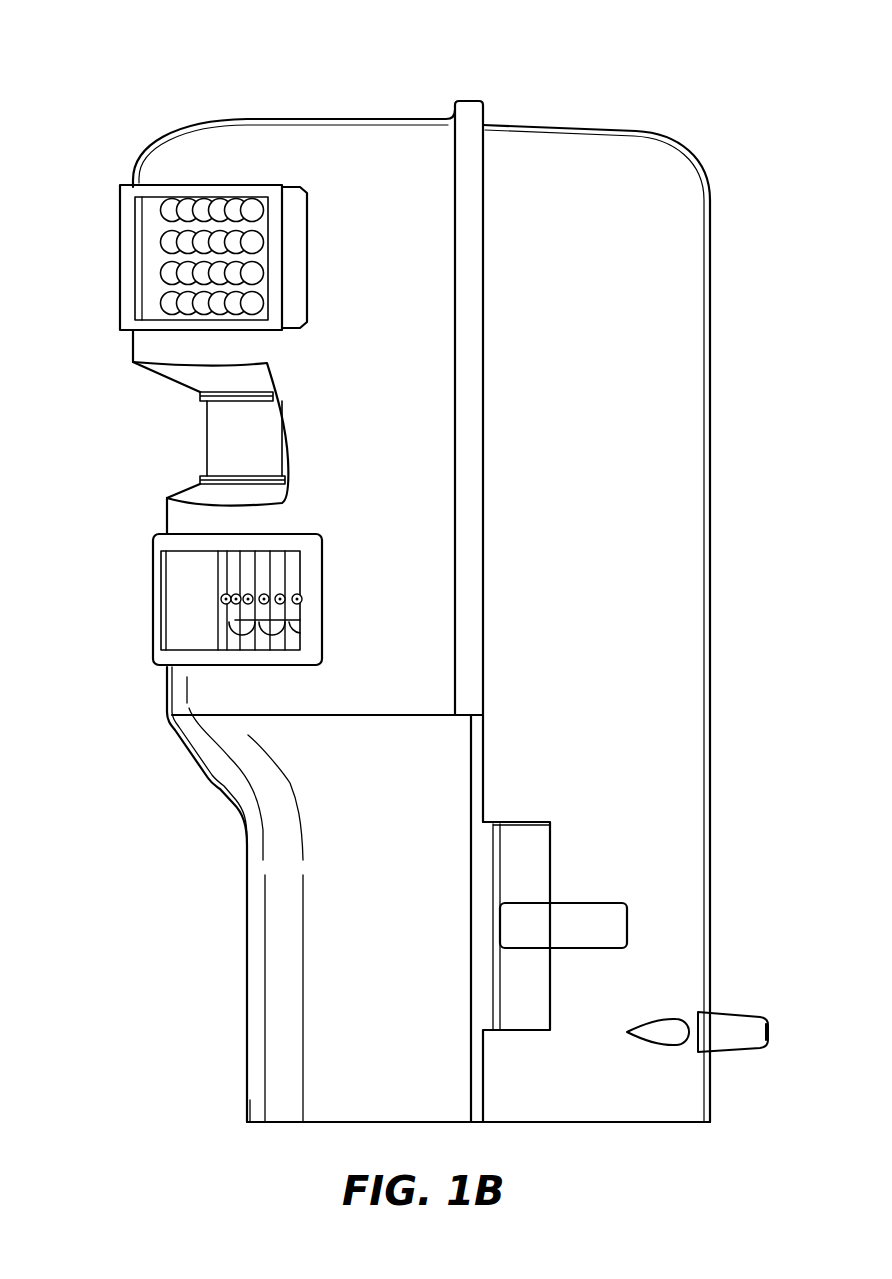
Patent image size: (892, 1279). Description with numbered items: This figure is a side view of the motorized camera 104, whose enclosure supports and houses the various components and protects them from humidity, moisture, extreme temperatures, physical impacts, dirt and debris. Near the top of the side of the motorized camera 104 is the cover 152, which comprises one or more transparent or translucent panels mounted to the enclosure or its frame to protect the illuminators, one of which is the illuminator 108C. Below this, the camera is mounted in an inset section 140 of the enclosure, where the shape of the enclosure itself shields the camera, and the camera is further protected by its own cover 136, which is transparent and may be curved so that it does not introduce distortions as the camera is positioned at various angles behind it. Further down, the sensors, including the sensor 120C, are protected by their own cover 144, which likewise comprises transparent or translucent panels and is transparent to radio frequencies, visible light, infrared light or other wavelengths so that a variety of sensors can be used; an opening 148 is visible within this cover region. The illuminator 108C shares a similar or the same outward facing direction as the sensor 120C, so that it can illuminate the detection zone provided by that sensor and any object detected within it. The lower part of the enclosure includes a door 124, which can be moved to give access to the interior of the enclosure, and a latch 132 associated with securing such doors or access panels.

The motorized camera 104 is at (728, 128).
The cover 152 is at (138, 184).
The illuminator 108C is at (186, 210).
The inset section 140 is at (158, 408).
The cover 136 is at (207, 446).
The cover 144 is at (183, 531).
The compartment opening 148 is at (193, 587).
The sensor 120C is at (232, 618).
The door 124 is at (258, 863).
The latch 132 is at (580, 903).